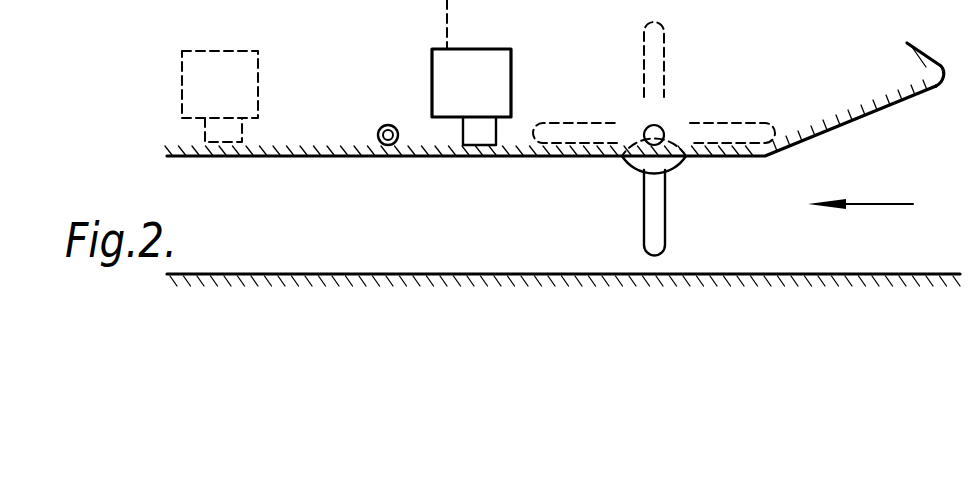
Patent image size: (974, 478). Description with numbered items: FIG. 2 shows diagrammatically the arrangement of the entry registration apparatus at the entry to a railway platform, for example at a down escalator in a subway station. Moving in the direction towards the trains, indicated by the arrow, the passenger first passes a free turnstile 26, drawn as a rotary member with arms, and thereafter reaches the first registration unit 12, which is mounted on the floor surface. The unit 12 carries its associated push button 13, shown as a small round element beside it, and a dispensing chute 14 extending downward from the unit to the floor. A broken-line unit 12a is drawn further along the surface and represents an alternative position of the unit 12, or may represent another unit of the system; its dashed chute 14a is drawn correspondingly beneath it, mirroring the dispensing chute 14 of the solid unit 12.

The broken line unit 12a is at (205, 78).
The stub (alternate position, dashed) 14a is at (222, 130).
The push button 13 is at (380, 127).
The first registration unit 12 is at (452, 88).
The dispensing chute 14 is at (484, 135).
The free turnstile 26 is at (662, 232).